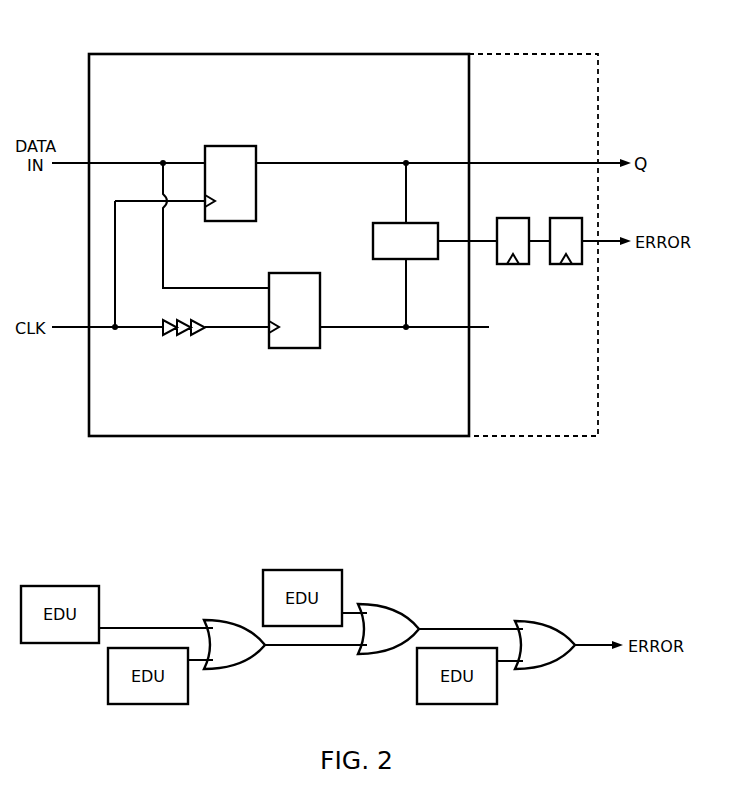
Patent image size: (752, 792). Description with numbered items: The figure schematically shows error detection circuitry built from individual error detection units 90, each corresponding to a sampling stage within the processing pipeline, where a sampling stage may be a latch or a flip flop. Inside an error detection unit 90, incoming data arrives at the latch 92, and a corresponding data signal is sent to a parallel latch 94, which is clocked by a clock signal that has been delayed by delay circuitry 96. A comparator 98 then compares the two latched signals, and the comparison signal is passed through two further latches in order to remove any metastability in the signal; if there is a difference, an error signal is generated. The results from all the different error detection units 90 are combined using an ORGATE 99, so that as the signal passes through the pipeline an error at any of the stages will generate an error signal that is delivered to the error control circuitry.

The error detection unit 90 is at (427, 54).
The latch 92 is at (232, 146).
The parallel latch 94 is at (295, 273).
The delay circuitry 96 is at (205, 340).
The comparator 98 is at (424, 223).
The ORGATE 99 is at (243, 665).